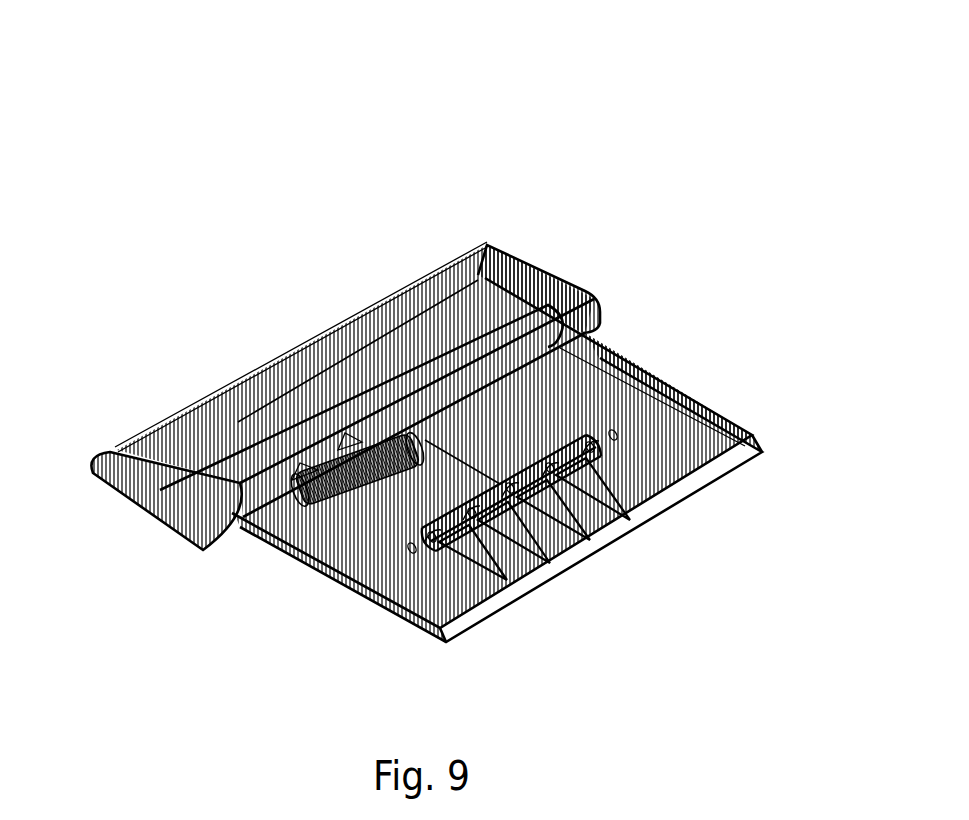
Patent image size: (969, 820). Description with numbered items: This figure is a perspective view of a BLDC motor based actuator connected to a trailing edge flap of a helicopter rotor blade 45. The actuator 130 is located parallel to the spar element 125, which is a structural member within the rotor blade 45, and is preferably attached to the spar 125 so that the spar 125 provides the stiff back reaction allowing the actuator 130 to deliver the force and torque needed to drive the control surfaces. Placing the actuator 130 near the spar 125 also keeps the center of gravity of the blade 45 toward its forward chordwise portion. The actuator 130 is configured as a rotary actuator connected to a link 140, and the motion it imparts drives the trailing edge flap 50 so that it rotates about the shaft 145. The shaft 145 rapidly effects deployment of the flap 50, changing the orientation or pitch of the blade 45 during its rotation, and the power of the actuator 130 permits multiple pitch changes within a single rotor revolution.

The rotor blade 45 is at (514, 103).
The trailing edge flap 50 is at (653, 520).
The spar element 125 is at (507, 262).
The actuator 130 is at (407, 435).
The link 140 is at (483, 458).
The shaft 145 is at (430, 542).